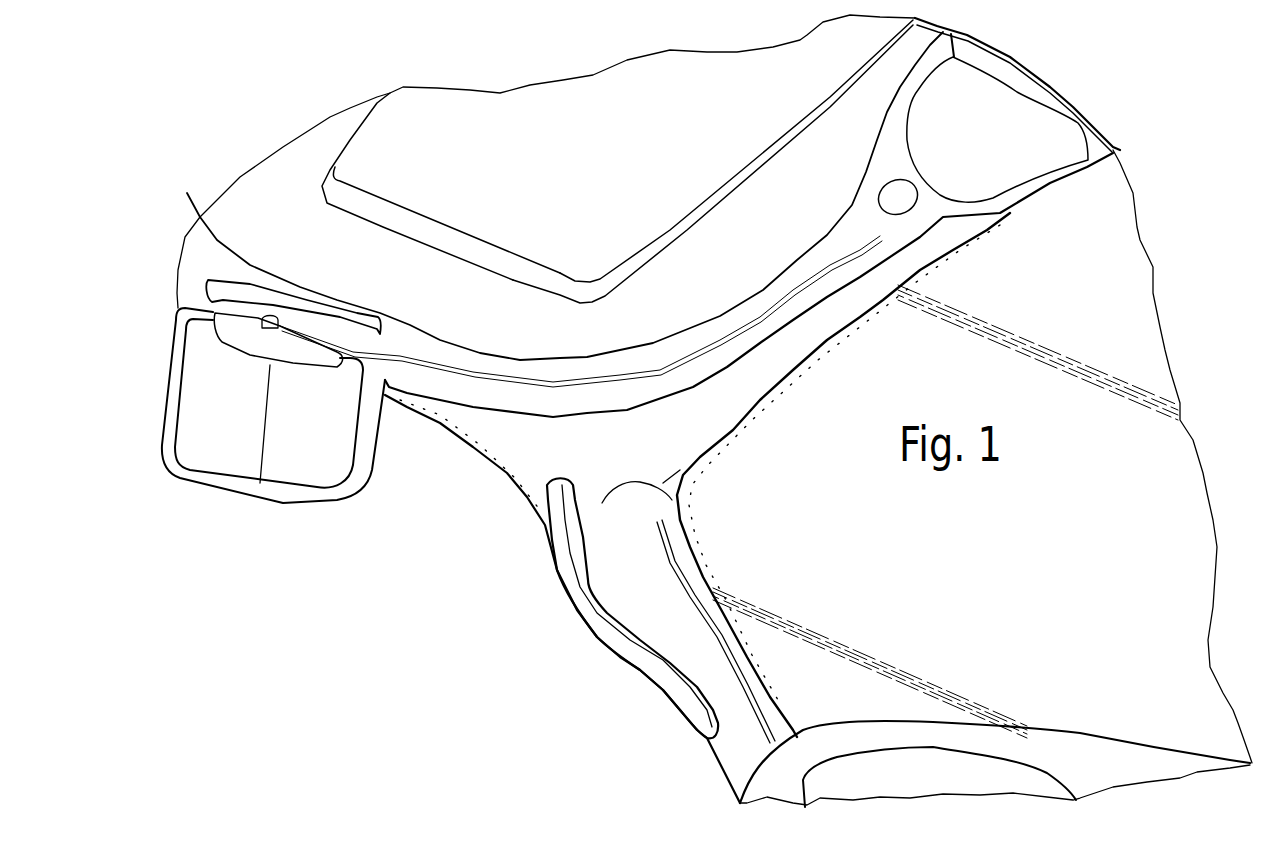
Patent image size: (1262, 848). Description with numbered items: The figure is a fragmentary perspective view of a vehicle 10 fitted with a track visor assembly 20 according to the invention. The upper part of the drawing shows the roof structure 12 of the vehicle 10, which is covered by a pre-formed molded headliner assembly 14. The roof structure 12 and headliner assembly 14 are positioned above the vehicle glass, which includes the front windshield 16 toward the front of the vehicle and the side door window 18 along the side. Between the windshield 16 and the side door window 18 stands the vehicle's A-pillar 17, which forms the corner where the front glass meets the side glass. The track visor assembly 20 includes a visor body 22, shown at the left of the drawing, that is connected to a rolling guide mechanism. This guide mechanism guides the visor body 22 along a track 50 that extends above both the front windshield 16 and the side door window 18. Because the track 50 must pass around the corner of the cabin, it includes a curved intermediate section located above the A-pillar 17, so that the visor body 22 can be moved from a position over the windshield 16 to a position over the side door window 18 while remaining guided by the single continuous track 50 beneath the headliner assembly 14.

The vehicle 10 is at (1062, 553).
The roof structure 12 is at (845, 88).
The pre-formed molded headliner assembly 14 is at (807, 197).
The front windshield 16 is at (741, 419).
The A-pillar 17 is at (663, 553).
The side door window 18 is at (455, 437).
The track visor assembly 20 is at (200, 281).
The visor body 22 is at (292, 477).
The track 50 is at (240, 258).